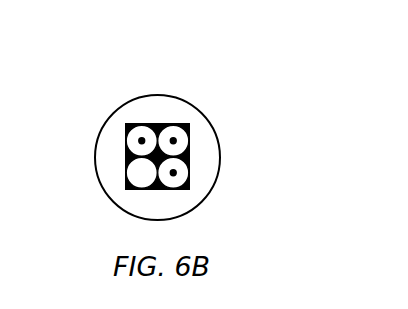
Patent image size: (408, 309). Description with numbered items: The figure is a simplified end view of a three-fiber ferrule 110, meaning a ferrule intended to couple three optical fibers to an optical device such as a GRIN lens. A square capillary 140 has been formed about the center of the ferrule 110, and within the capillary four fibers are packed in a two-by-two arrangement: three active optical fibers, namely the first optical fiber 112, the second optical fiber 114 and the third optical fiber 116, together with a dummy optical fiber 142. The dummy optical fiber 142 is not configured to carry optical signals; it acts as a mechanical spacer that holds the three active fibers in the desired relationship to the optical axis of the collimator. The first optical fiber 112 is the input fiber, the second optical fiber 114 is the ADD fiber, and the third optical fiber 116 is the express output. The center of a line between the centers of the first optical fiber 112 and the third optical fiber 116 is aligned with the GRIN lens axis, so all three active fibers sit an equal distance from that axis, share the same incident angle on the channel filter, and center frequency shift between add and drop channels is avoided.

The ferrule 110 is at (158, 93).
The first optical fiber 112 is at (142, 141).
The second optical fiber 114 is at (173, 141).
The third optical fiber 116 is at (173, 173).
The square capillary 140 is at (189, 158).
The dummy optical fiber 142 is at (142, 173).